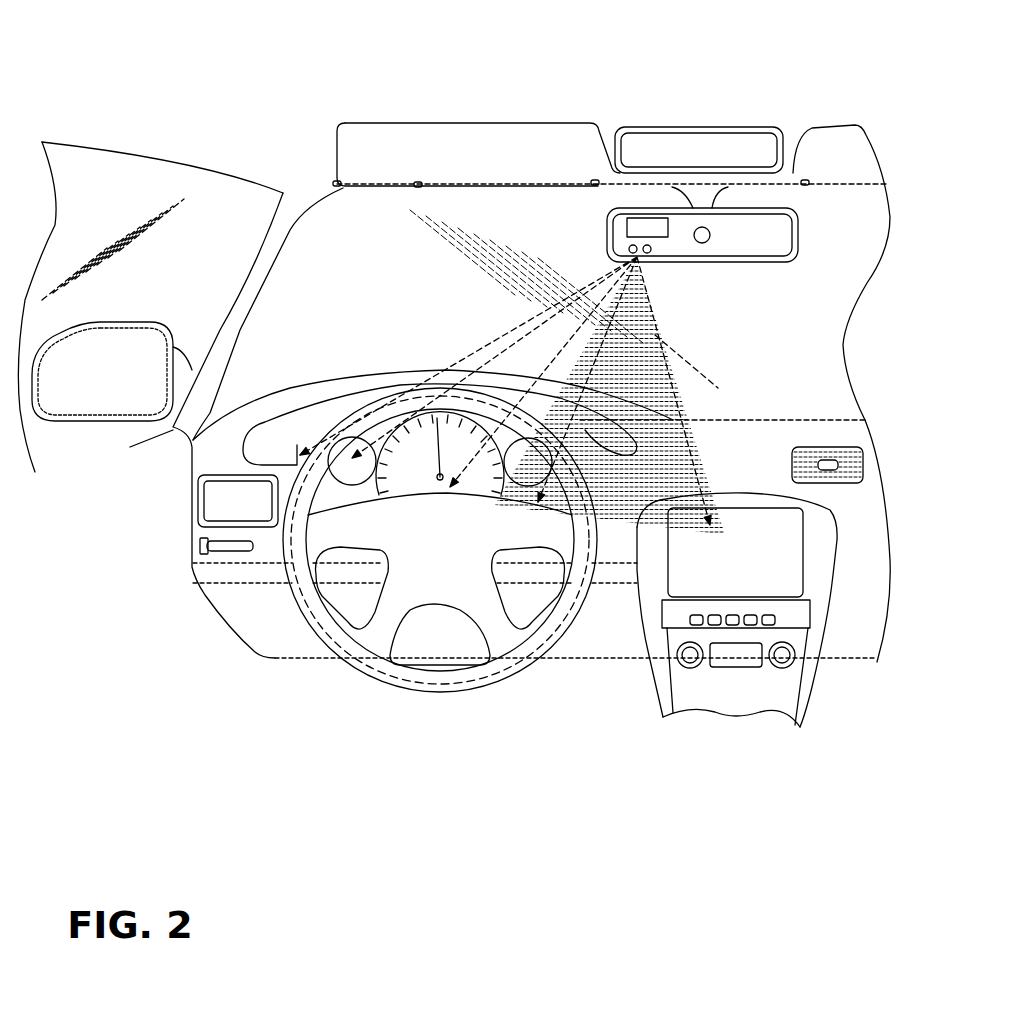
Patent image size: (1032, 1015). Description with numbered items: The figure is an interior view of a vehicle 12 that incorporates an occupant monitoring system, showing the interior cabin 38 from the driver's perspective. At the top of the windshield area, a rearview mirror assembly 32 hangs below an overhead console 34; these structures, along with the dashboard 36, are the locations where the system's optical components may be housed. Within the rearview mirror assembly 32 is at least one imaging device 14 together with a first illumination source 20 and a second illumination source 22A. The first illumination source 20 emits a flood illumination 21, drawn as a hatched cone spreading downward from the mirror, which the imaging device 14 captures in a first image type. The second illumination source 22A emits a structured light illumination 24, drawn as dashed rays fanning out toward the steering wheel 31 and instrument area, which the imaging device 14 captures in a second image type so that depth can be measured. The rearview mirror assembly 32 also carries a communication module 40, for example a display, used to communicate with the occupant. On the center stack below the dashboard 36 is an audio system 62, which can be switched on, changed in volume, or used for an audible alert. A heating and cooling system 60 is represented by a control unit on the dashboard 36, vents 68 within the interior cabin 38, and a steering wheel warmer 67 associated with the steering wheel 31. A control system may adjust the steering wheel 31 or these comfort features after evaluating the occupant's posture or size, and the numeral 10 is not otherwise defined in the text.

The vehicle cabin 10 is at (820, 255).
The vehicle 12 is at (820, 68).
The imaging device 14 is at (703, 228).
The first illumination source 20 is at (650, 248).
The flood illumination 21 is at (640, 312).
The second illumination source 22A is at (630, 249).
The structured light illumination 24 is at (438, 320).
The steering wheel 31 is at (278, 497).
The rearview mirror assembly 32 is at (747, 203).
The overhead console 34 is at (615, 172).
The dashboard 36 is at (727, 432).
The interior cabin 38 is at (833, 503).
The communication module 40 is at (655, 222).
The heating and cooling system 60 is at (852, 433).
The audio system 62 is at (682, 655).
The steering wheel warmer 67 is at (303, 595).
The vents 68 is at (813, 447).